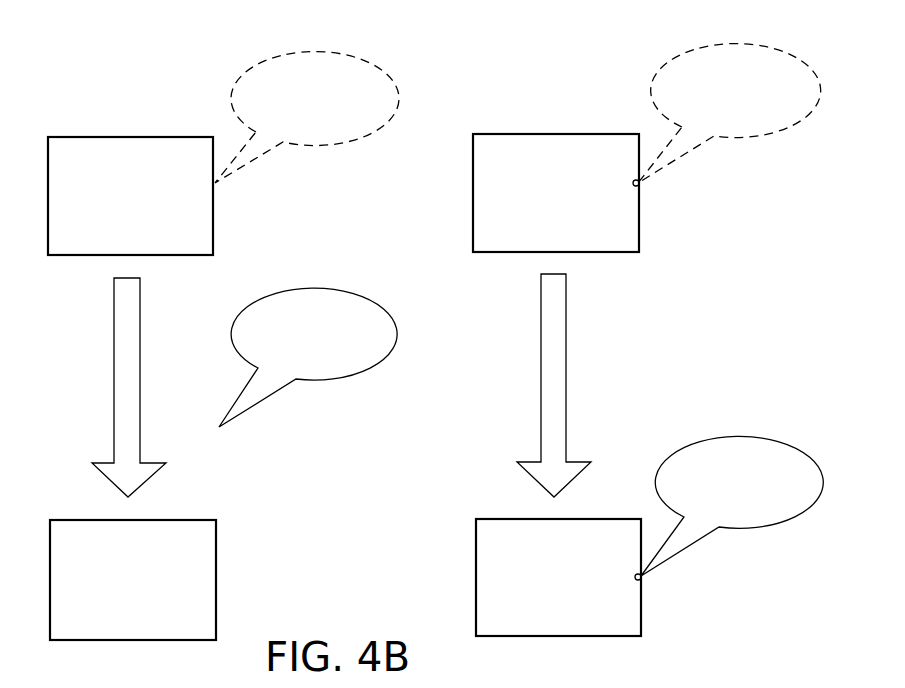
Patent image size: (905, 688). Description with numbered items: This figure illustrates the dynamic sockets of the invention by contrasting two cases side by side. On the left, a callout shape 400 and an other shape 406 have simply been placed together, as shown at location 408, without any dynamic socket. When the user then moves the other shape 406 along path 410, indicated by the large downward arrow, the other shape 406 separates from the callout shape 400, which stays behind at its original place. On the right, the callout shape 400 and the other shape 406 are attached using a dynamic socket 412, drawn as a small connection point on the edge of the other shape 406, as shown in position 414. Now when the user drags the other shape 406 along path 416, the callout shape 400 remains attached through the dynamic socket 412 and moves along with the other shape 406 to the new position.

The callout shape 400 is at (320, 55).
The other shape 406 is at (110, 143).
The location 408 is at (176, 90).
The path 410 is at (124, 377).
The dynamic socket 412 is at (640, 184).
The position 414 is at (610, 96).
The path 416 is at (547, 373).